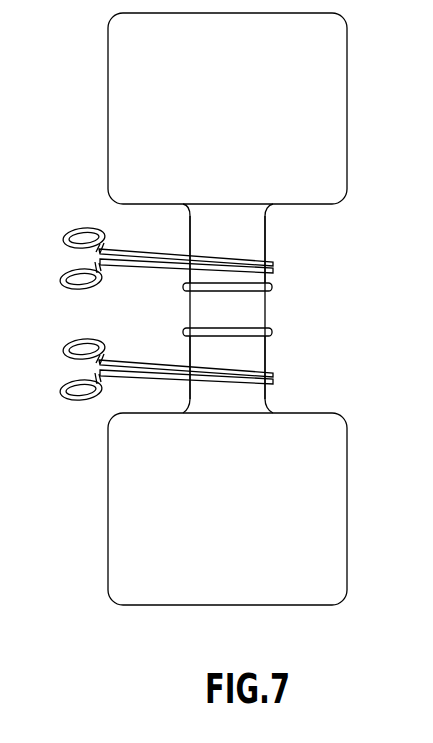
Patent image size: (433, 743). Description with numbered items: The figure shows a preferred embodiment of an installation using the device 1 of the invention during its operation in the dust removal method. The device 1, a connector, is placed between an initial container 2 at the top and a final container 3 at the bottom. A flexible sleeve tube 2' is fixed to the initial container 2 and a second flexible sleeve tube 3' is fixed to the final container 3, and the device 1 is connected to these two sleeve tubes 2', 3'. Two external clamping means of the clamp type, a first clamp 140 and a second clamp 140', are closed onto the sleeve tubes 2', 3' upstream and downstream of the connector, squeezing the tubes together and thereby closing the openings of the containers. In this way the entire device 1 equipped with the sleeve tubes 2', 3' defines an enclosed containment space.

The initial container 2 is at (227, 108).
The final container 3 is at (227, 509).
The device 1 is at (218, 317).
The flexible sleeve tube 2' is at (227, 249).
The flexible sleeve tube 3' is at (227, 367).
The clamp 140 is at (166, 222).
The clamp 140' is at (166, 408).